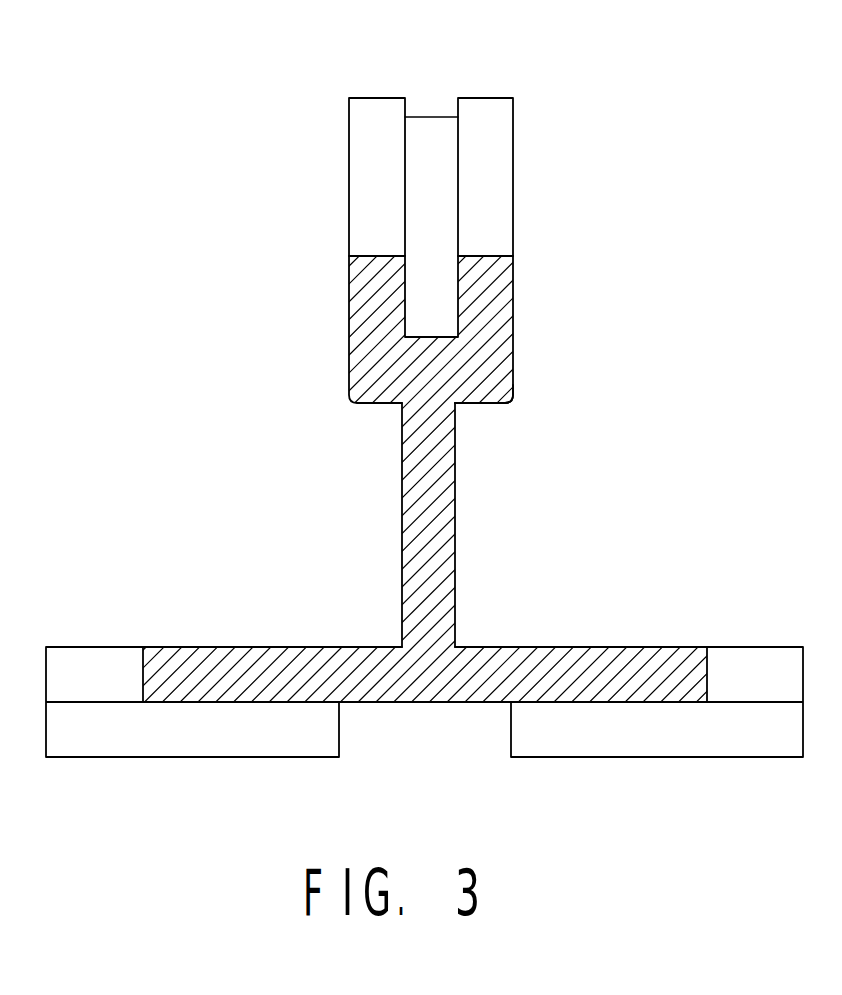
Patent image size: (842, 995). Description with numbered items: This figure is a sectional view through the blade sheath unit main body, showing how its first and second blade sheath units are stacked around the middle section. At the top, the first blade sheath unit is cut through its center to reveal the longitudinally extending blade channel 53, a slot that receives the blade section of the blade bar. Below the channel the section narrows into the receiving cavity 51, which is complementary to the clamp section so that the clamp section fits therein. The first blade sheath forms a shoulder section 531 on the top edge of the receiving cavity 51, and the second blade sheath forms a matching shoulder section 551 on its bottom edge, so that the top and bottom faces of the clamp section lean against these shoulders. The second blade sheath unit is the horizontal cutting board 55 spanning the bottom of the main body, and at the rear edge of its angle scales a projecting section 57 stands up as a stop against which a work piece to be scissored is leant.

The blade channel 53 is at (427, 293).
The shoulder section 531 is at (478, 406).
The receiving cavity 51 is at (445, 480).
The shoulder section 551 is at (487, 645).
The horizontal cutting board 55 is at (508, 680).
The projecting section 57 is at (673, 758).